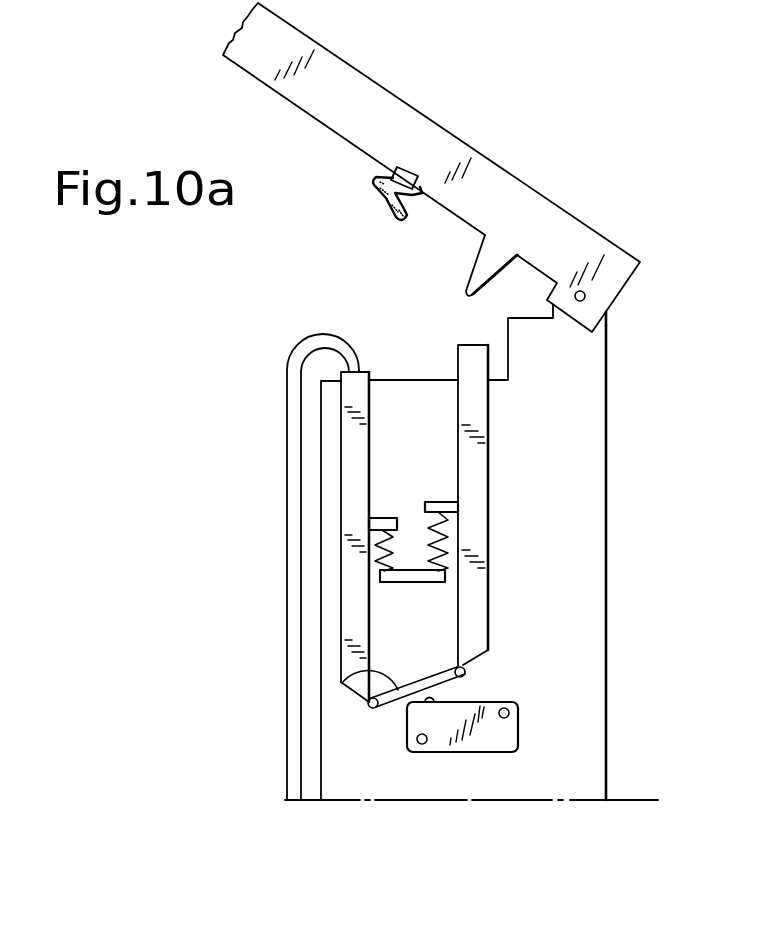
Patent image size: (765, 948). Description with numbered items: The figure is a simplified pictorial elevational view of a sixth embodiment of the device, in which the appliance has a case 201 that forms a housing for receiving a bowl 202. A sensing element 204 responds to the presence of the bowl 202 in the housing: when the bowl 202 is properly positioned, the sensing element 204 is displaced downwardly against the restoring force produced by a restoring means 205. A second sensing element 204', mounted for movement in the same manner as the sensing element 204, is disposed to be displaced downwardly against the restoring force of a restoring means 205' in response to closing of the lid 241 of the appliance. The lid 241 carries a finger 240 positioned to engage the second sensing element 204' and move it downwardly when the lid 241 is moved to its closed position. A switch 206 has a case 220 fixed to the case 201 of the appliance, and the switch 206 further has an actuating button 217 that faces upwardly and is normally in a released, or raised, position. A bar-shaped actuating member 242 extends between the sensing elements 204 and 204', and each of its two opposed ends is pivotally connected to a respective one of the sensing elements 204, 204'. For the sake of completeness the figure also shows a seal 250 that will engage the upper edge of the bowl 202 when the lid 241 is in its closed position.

The case 201 is at (592, 612).
The bowl 202 is at (287, 632).
The sensing element 204 is at (299, 537).
The second sensing element 204' is at (524, 505).
The restoring means 205 is at (322, 550).
The restoring means 205' is at (505, 536).
The switch 206 is at (470, 747).
The actuating button 217 is at (433, 697).
The case 220 is at (513, 752).
The finger 240 is at (466, 287).
The lid 241 is at (545, 213).
The actuating member 242 is at (358, 688).
The seal 250 is at (390, 208).